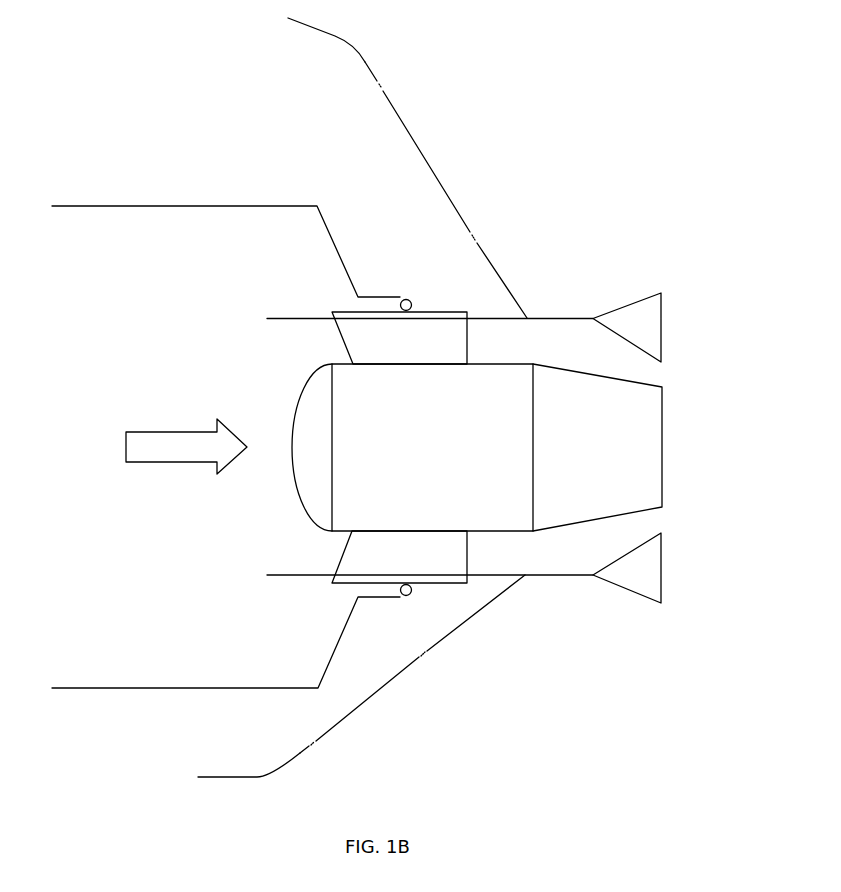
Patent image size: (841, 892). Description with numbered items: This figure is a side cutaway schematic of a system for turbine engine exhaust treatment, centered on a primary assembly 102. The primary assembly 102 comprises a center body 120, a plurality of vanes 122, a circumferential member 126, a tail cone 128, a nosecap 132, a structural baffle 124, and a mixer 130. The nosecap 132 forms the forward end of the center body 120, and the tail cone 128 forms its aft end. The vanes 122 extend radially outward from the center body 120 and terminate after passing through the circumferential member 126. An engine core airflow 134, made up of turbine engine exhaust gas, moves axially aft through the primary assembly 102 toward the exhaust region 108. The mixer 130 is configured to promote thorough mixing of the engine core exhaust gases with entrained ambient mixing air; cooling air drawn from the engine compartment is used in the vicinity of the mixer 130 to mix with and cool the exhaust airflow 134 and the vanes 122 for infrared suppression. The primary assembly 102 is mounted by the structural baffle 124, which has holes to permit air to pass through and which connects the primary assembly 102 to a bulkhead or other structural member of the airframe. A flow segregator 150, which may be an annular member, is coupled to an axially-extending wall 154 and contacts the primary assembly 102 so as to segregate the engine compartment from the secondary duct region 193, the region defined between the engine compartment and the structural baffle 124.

The primary assembly 102 is at (245, 386).
The exhaust region 108 is at (802, 439).
The center body 120 is at (427, 455).
The plurality of vanes 122 is at (416, 354).
The structural baffle 124 is at (413, 137).
The circumferential member 126 is at (288, 320).
The tail cone 128 is at (596, 459).
The mixer 130 is at (657, 330).
The nosecap 132 is at (312, 482).
The airflow 134 is at (186, 446).
The flow segregator 150 is at (410, 300).
The axially-extending wall 154 is at (330, 237).
The secondary duct region 193 is at (322, 85).